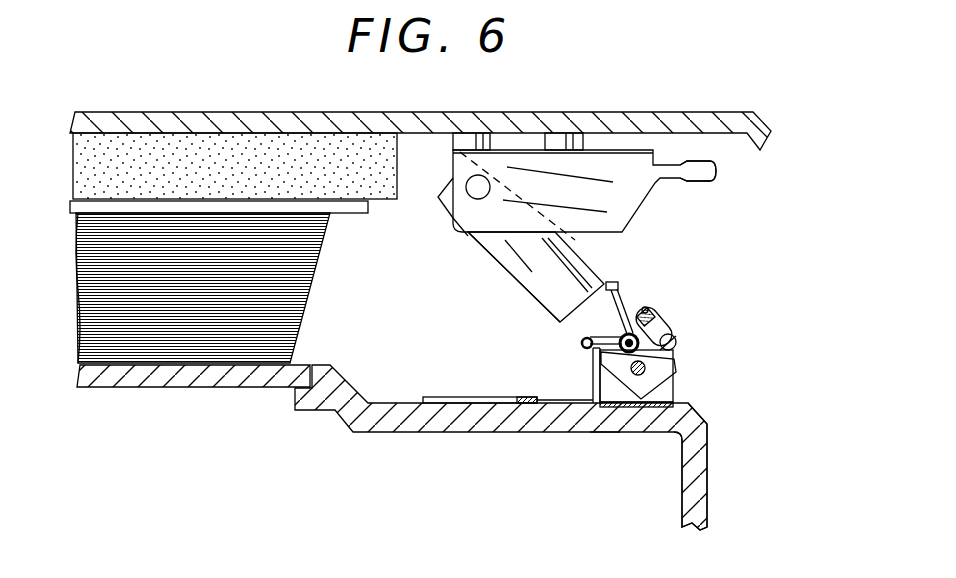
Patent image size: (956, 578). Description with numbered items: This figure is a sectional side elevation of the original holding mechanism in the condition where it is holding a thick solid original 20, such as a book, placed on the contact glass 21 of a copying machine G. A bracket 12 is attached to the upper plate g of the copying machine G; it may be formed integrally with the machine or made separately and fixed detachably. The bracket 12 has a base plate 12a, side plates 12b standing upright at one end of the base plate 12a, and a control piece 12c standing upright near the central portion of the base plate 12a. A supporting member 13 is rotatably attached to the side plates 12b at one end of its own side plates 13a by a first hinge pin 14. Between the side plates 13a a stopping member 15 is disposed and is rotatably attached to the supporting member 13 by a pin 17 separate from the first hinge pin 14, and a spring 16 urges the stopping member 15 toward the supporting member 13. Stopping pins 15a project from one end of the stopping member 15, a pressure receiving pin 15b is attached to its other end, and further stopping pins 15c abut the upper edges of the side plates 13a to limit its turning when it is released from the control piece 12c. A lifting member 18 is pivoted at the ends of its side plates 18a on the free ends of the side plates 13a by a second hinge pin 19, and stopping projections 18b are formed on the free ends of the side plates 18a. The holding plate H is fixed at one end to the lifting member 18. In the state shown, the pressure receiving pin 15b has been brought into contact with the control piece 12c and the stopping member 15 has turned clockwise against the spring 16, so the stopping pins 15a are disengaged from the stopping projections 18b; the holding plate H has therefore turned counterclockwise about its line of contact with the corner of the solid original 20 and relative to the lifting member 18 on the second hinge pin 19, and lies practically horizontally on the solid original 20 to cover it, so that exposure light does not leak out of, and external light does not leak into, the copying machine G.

The holding plate H is at (190, 110).
The solid original 20 is at (303, 291).
The contact glass 21 is at (181, 388).
The bracket 12 is at (567, 408).
The base plate 12a is at (455, 400).
The side plates 12b is at (670, 395).
The control piece 12c is at (594, 372).
The supporting member 13 is at (605, 262).
The side plates 13a is at (511, 258).
The first hinge pin 14 is at (648, 374).
The stopping member 15 is at (676, 322).
The stopping pins 15a is at (677, 348).
The pressure receiving pin 15b is at (585, 342).
The stopping pins 15c is at (650, 310).
The spring 16 is at (622, 308).
The pin 17 is at (682, 333).
The lifting member 18 is at (656, 200).
The side plates 18a is at (465, 222).
The stopping projections 18b is at (700, 172).
The second hinge pin 19 is at (470, 192).
The upper plate g is at (604, 433).
The copying machine G is at (711, 483).